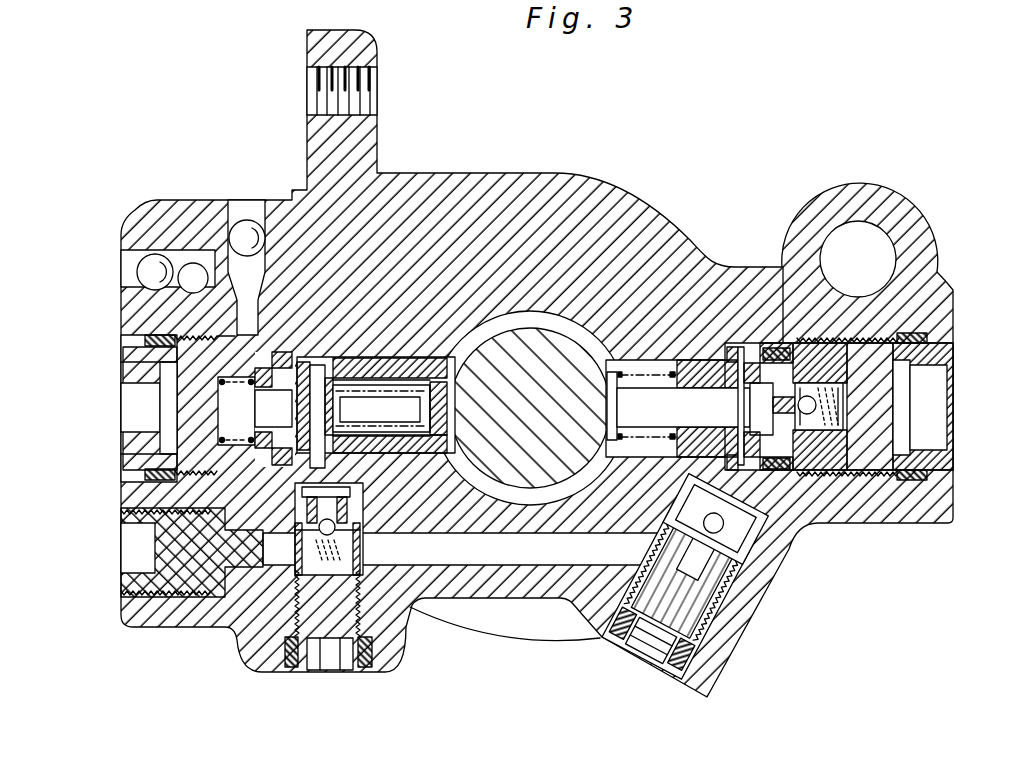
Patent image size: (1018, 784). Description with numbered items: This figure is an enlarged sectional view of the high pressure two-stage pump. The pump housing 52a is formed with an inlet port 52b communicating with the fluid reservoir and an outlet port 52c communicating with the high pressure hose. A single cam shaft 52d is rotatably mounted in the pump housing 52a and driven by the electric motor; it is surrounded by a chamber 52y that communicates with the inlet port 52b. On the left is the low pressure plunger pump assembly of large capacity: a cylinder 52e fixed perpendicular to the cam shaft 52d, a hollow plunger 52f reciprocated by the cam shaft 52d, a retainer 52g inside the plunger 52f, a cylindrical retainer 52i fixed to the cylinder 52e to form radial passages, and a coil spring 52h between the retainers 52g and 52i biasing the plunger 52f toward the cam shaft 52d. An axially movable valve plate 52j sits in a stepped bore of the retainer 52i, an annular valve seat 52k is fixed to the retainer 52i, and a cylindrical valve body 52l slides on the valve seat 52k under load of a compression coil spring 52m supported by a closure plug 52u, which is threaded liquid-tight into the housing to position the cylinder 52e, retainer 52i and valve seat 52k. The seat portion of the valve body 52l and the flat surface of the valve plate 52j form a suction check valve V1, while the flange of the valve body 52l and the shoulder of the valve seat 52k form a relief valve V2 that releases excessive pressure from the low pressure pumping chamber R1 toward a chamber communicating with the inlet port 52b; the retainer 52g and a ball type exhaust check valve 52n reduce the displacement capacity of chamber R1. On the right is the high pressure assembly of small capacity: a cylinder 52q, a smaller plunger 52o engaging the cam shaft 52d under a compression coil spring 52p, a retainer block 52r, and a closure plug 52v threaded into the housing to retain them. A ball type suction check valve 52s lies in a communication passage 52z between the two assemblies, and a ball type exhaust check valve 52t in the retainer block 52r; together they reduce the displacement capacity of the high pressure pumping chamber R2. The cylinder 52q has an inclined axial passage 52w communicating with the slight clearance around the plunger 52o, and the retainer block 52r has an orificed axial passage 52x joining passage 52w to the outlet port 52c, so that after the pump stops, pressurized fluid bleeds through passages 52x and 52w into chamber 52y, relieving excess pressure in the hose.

The pump housing 52a is at (488, 592).
The inlet port 52b is at (193, 262).
The outlet port 52c is at (843, 227).
The cam shaft 52d is at (543, 333).
The cylinder 52e is at (447, 387).
The hollow plunger 52f is at (437, 360).
The retainer 52g is at (415, 390).
The coil spring 52h is at (388, 358).
The cylindrical retainer 52i is at (300, 350).
The valve plate 52j is at (260, 255).
The annular valve seat 52k is at (287, 365).
The cylindrical valve body 52l is at (262, 388).
The compression coil spring 52m is at (215, 375).
The exhaust check valve 52n is at (327, 535).
The plunger 52o is at (657, 392).
The compression coil spring 52p is at (623, 372).
The cylinder 52q is at (683, 360).
The retainer block 52r is at (757, 343).
The suction check valve 52s is at (722, 527).
The exhaust check valve 52t is at (807, 414).
The closure plug 52u is at (128, 465).
The closure plug 52v is at (947, 352).
The inclined axial passage 52w is at (702, 392).
The axial passage 52x is at (741, 362).
The chamber 52y is at (513, 312).
The communication passage 52z is at (550, 550).
The low pressure pumping chamber R1 is at (340, 458).
The high pressure pumping chamber R2 is at (780, 430).
The suction check valve V1 is at (305, 465).
The relief valve V2 is at (283, 455).